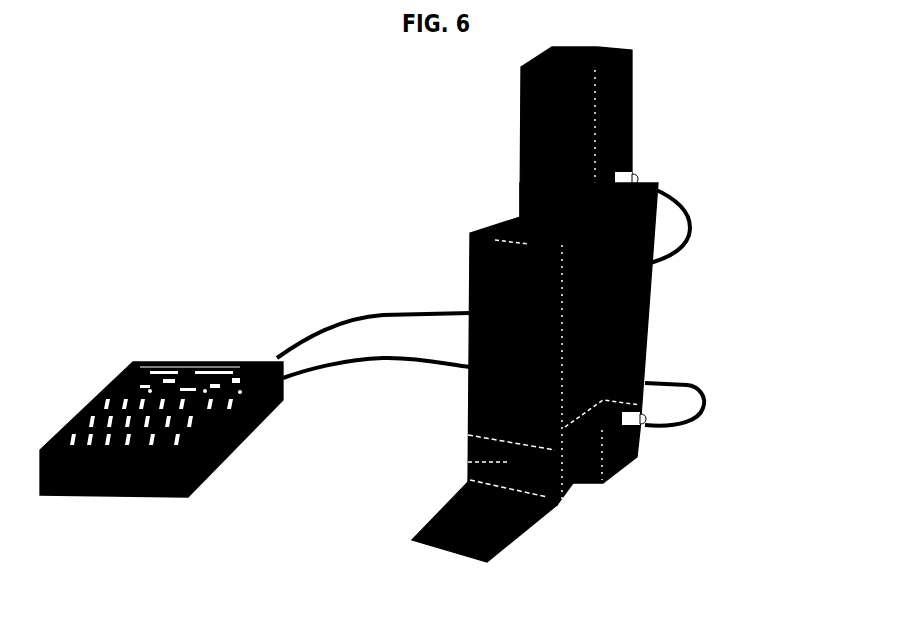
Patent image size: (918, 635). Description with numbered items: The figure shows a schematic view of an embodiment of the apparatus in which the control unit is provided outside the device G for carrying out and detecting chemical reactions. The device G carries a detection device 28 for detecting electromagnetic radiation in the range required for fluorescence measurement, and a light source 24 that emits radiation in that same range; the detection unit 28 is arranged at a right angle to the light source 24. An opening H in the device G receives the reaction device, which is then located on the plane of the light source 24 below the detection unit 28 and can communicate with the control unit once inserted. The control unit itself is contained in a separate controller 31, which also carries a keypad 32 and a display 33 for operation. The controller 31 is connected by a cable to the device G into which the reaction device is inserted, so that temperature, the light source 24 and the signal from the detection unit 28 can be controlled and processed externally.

The detection device 28 is at (632, 127).
The device for carrying out and detecting chemical reactions G is at (648, 316).
The light source 24 is at (640, 437).
The opening H is at (468, 462).
The controller 31 is at (129, 495).
The keypad 32 is at (87, 415).
The display 33 is at (133, 363).